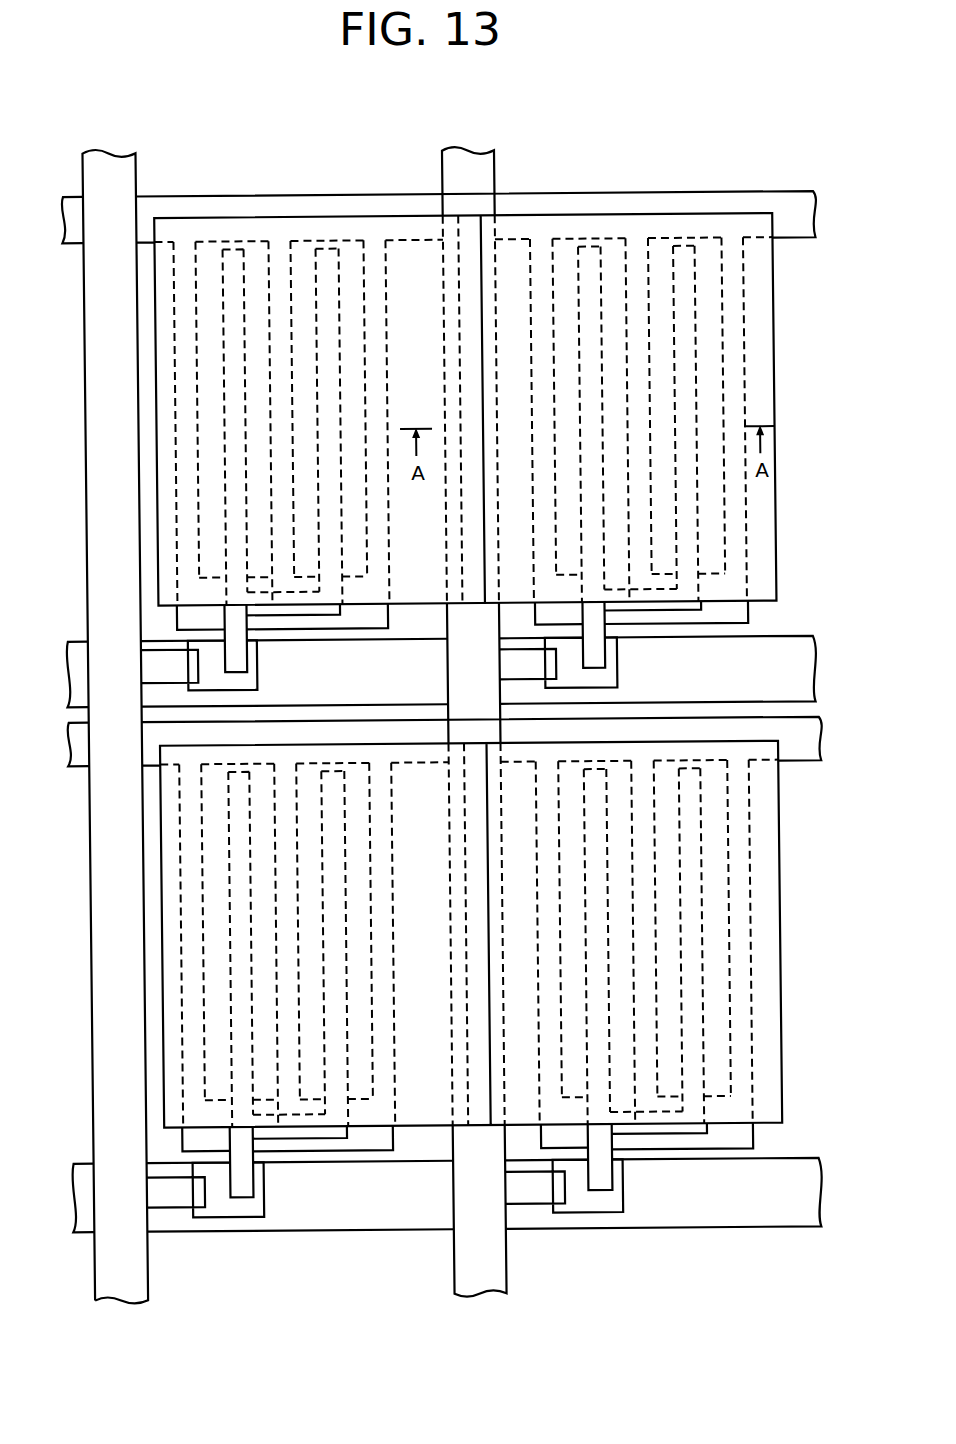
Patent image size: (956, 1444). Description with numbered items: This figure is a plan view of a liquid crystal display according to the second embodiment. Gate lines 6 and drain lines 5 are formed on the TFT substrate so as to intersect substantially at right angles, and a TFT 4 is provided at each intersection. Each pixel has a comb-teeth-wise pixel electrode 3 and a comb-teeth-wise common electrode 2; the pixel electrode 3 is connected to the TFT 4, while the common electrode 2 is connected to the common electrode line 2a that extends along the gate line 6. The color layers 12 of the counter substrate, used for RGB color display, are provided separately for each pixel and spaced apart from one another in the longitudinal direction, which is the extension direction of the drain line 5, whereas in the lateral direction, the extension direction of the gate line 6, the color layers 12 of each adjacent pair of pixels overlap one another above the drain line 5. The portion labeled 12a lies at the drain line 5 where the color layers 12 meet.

The common electrode 2 is at (540, 270).
The common electrode line 2a is at (272, 196).
The pixel electrode 3 is at (683, 280).
The TFT 4 is at (608, 661).
The drain line 5 is at (120, 1243).
The gate line 6 is at (808, 668).
The color layer 12 is at (378, 236).
The light shielding film extension 12a is at (466, 233).